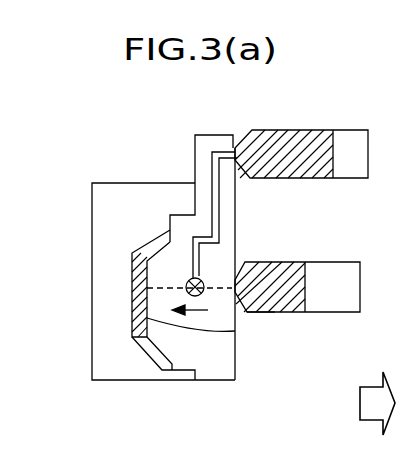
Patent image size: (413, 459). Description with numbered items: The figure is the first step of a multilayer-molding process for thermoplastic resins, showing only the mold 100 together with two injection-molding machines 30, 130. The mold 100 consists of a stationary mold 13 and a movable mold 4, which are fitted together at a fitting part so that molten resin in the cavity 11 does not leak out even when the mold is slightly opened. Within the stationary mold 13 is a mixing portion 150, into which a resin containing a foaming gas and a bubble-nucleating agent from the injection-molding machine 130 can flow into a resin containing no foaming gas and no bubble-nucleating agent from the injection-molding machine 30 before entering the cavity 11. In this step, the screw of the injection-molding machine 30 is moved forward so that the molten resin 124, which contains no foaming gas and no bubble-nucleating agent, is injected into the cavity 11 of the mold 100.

The movable mold 4 is at (120, 367).
The mold 100 is at (156, 170).
The cavity 11 is at (152, 240).
The stationary mold 13 is at (222, 357).
The mixing portion 150 is at (205, 275).
The injection-molding machine 130 is at (336, 122).
The injection-molding machine 30 is at (325, 252).
The molten resin 124 is at (260, 313).